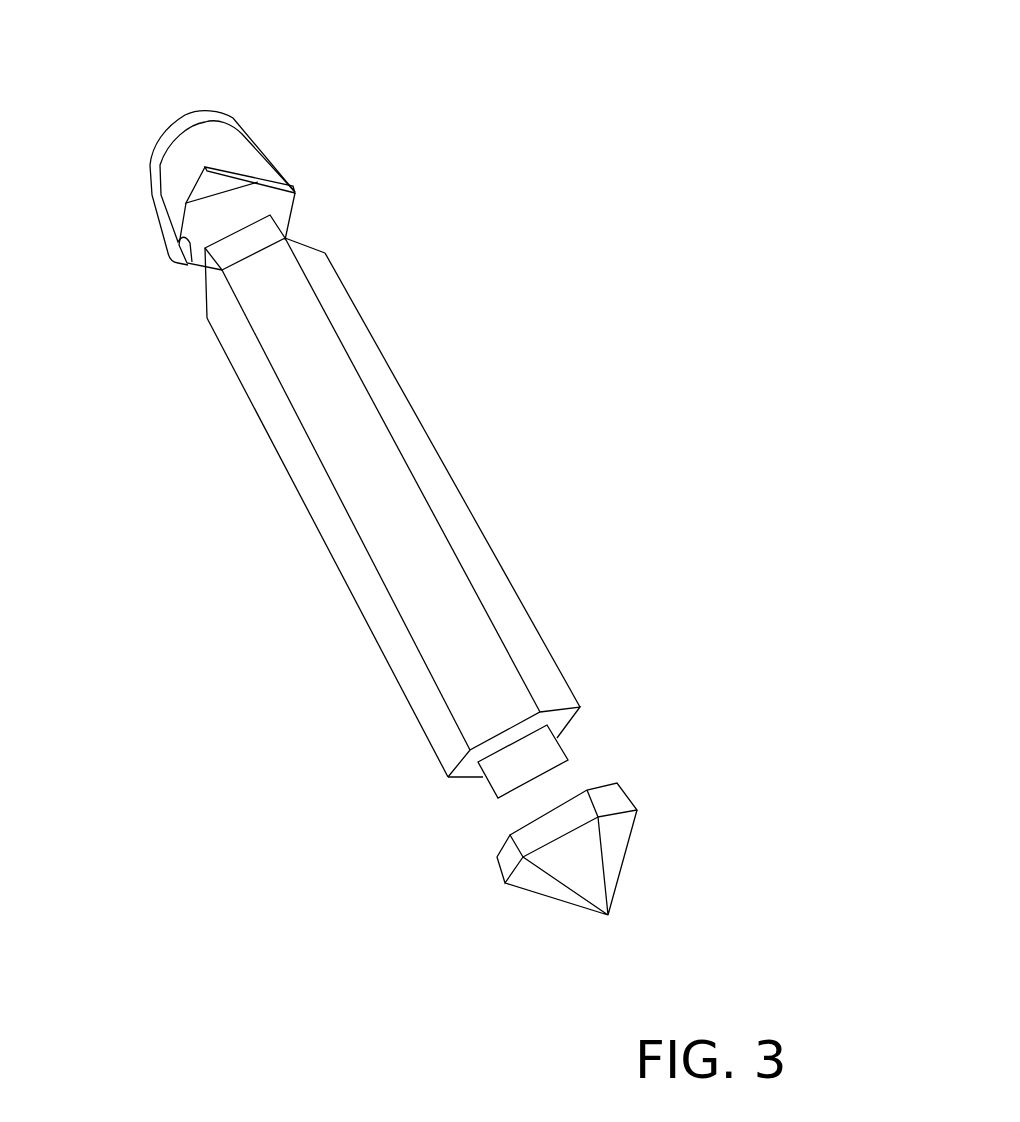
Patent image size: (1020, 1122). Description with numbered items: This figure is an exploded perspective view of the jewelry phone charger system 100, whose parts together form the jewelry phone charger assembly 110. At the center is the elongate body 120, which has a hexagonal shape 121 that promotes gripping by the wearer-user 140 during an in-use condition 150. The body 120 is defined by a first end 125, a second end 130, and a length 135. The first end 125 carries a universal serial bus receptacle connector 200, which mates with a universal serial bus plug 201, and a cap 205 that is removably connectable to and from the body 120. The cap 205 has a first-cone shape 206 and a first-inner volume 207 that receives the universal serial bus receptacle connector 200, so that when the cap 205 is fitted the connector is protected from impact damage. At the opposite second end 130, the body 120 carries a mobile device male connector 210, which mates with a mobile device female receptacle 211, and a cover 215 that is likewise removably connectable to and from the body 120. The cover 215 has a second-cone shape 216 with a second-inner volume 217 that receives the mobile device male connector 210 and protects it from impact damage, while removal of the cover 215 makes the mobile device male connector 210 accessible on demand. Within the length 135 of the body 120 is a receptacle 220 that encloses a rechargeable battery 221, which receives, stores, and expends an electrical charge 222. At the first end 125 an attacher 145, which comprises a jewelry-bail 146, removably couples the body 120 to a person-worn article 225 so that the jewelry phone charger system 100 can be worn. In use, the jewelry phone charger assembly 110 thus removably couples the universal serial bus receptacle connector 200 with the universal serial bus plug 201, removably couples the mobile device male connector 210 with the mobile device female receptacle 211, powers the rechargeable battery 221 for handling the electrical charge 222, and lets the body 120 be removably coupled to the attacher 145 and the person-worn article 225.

The jewelry phone charger system 100 is at (527, 40).
The jewelry phone charger assembly 110 is at (545, 85).
The body 120 is at (365, 557).
The hexagonal shape 121 is at (283, 343).
The first end 125 is at (209, 312).
The second end 130 is at (430, 790).
The length 135 is at (308, 517).
The wearer-user 140 is at (563, 135).
The attacher 145 is at (251, 149).
The jewelry-bail 146 is at (255, 132).
The in-use condition 150 is at (580, 182).
The universal serial bus receptacle connector 200 is at (243, 191).
The universal serial bus plug 201 is at (598, 235).
The cap 205 is at (252, 191).
The first-cone shape 206 is at (204, 195).
The first-inner volume 207 is at (248, 210).
The mobile device male connector 210 is at (535, 752).
The mobile device female receptacle 211 is at (612, 285).
The cover 215 is at (588, 852).
The second-cone shape 216 is at (593, 888).
The second-inner volume 217 is at (553, 843).
The receptacle 220 is at (383, 550).
The rechargeable battery 221 is at (415, 608).
The electrical charge 222 is at (628, 335).
The person-worn article 225 is at (645, 380).